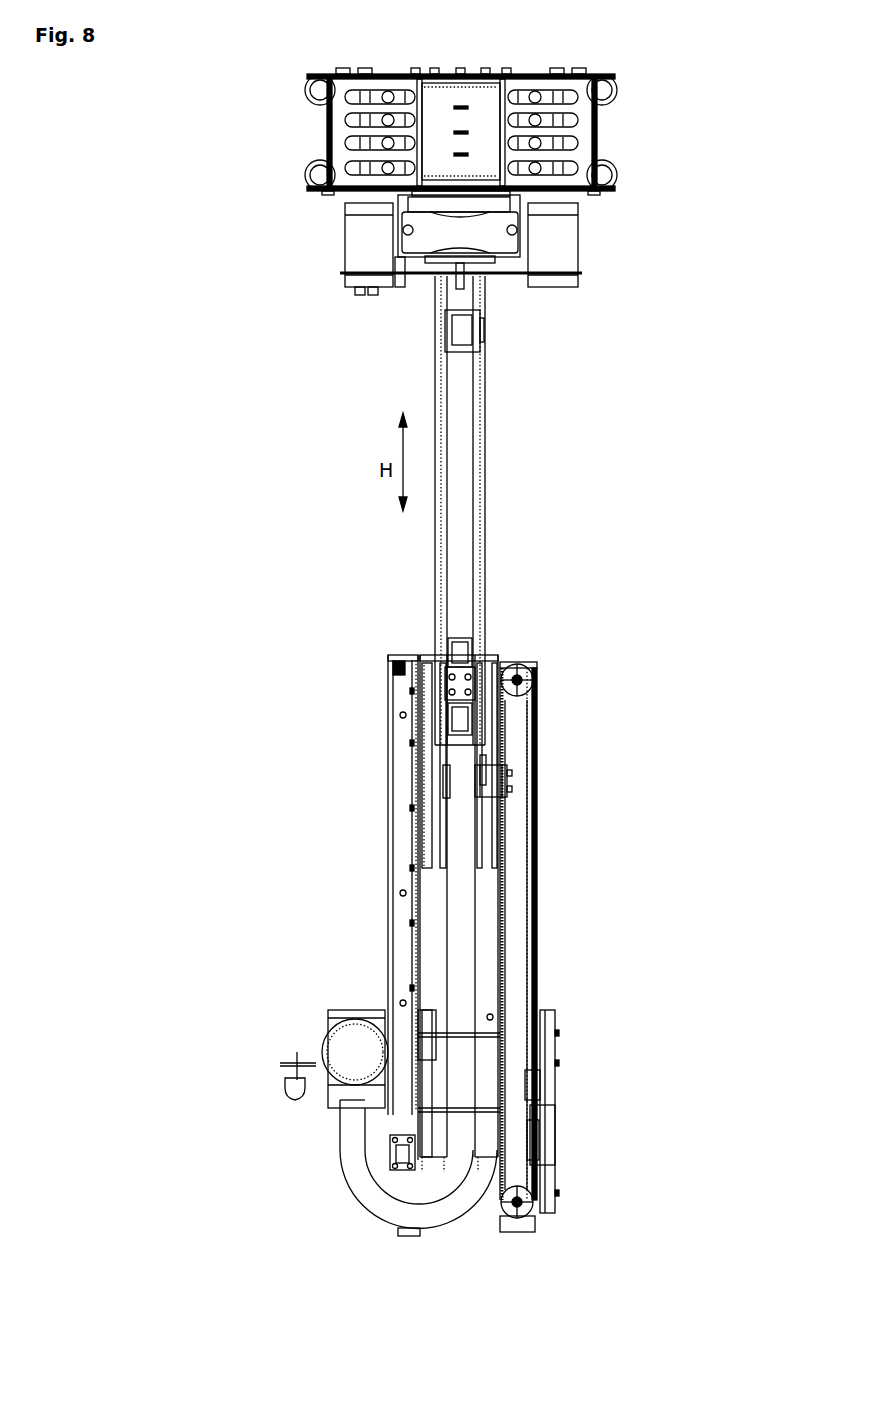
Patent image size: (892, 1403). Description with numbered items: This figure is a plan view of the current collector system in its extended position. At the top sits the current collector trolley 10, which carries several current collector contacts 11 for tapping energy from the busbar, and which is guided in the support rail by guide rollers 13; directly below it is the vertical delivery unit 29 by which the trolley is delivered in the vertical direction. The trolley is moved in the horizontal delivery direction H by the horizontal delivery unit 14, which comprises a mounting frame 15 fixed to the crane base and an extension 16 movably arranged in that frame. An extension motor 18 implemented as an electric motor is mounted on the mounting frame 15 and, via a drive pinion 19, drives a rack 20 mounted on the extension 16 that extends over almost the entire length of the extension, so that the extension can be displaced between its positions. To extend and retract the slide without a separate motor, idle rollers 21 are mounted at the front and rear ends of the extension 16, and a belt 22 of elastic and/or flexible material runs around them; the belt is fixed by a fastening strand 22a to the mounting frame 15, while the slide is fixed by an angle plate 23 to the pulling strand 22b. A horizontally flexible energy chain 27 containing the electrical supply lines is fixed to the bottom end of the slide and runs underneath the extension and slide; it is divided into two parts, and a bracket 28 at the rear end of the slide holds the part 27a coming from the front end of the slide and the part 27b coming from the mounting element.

The current collector trolley 10 is at (604, 75).
The current collector contacts 11 is at (375, 83).
The guide rollers 13 is at (310, 102).
The horizontal delivery unit 14 is at (600, 536).
The mounting frame 15 is at (555, 1045).
The extension 16 is at (388, 741).
The extension motor 18 is at (328, 1040).
The drive pinion 19 is at (385, 1012).
The rack 20 is at (395, 917).
The idle rollers 21 is at (533, 670).
The belt 22 is at (537, 858).
The fastening strand 22a is at (537, 908).
The pulling strand 22b is at (505, 957).
The angle plate 23 is at (512, 785).
The energy chain 27 is at (473, 448).
The part of the energy chain 27a is at (470, 398).
The part of the energy chain 27b is at (345, 1195).
The bracket 28 is at (480, 652).
The vertical delivery unit 29 is at (655, 229).